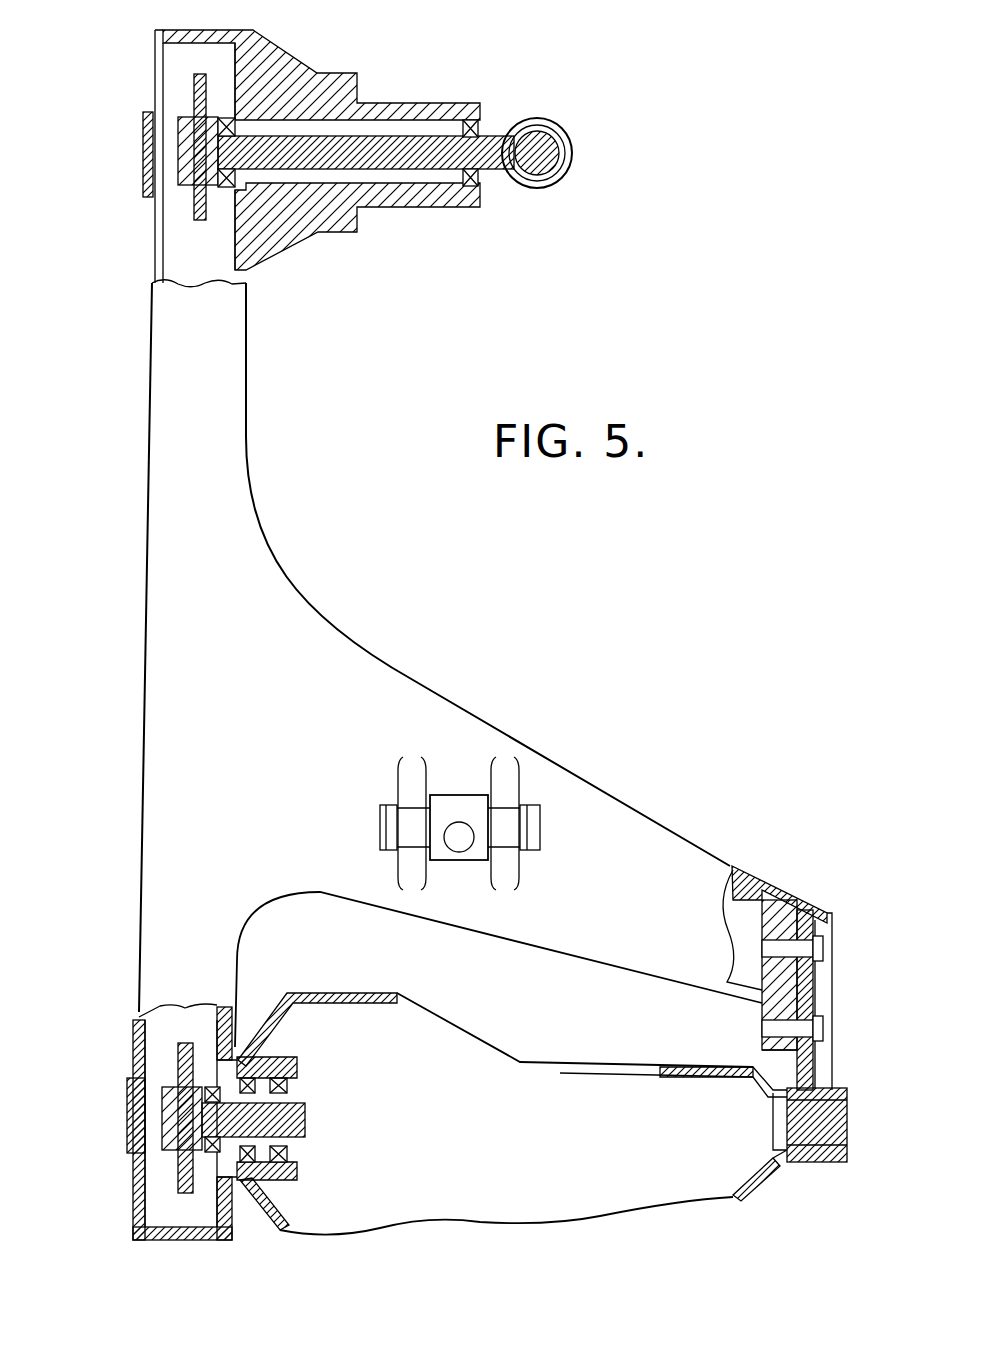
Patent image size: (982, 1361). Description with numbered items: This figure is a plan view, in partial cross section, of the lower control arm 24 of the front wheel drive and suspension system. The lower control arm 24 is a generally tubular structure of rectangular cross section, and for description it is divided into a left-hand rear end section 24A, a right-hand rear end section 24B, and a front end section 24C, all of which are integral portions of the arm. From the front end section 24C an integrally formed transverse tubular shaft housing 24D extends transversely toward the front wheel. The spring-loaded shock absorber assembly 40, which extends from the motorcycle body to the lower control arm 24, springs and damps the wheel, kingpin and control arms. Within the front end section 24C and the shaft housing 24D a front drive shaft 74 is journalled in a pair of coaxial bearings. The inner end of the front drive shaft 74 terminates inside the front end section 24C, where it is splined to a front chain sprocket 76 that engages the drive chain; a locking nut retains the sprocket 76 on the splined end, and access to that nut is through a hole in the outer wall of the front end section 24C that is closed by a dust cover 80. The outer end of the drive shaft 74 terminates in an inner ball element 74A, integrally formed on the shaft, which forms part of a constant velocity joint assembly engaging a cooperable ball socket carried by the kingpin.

The lower control arm 24 is at (240, 647).
The left-hand rear end section 24A is at (122, 976).
The right-hand rear end section 24B is at (659, 806).
The front end section 24C is at (262, 298).
The transverse tubular shaft housing 24D is at (341, 60).
The spring-loaded shock absorber assembly 40 is at (462, 779).
The front drive shaft 74 is at (422, 143).
The inner ball element 74A is at (560, 156).
The front chain sprocket 76 is at (195, 107).
The dust cover 80 is at (143, 162).